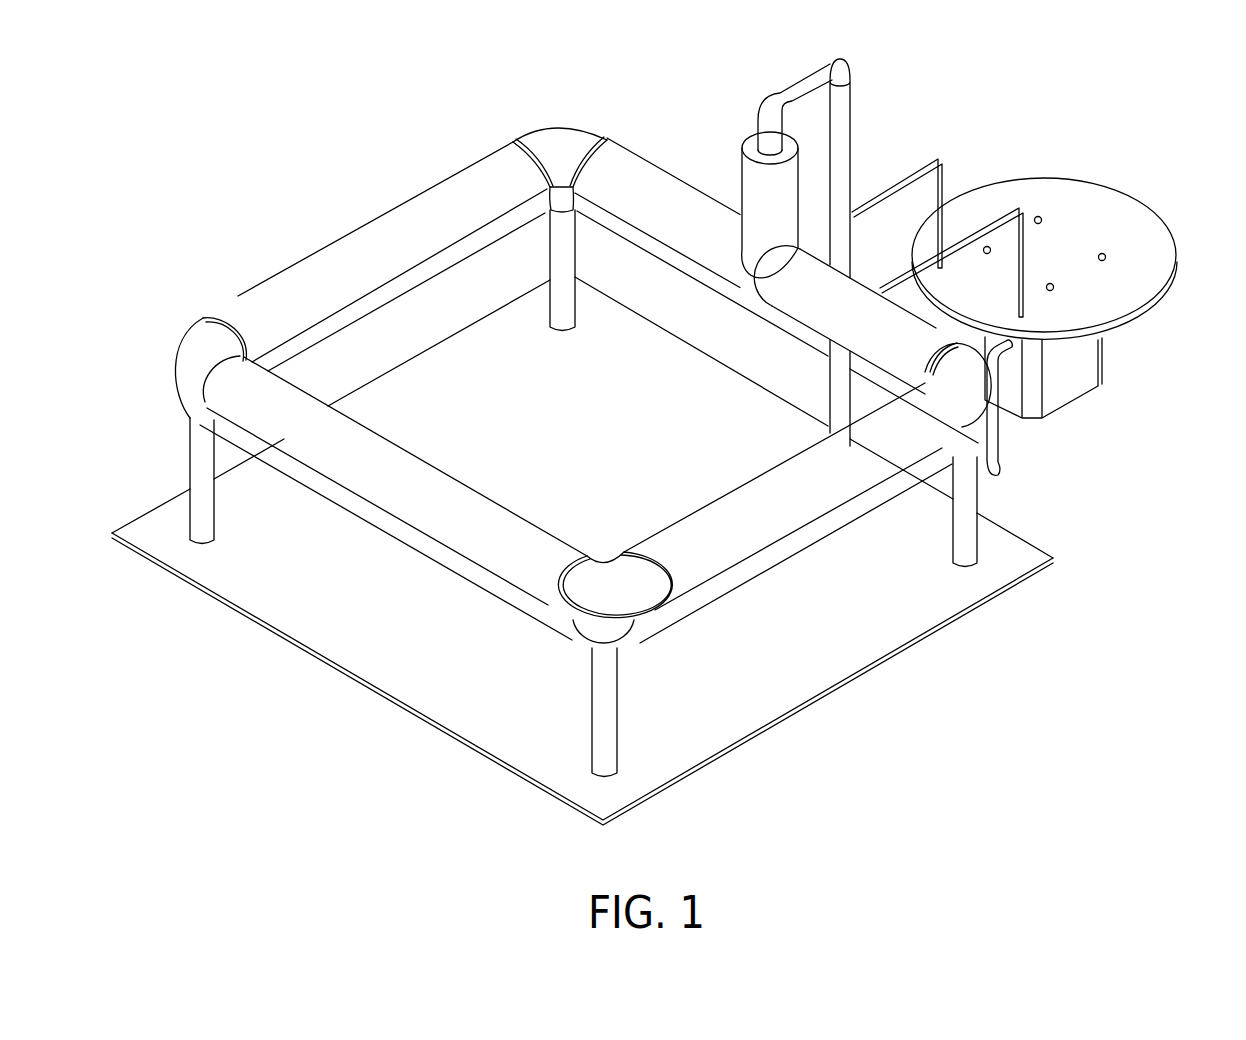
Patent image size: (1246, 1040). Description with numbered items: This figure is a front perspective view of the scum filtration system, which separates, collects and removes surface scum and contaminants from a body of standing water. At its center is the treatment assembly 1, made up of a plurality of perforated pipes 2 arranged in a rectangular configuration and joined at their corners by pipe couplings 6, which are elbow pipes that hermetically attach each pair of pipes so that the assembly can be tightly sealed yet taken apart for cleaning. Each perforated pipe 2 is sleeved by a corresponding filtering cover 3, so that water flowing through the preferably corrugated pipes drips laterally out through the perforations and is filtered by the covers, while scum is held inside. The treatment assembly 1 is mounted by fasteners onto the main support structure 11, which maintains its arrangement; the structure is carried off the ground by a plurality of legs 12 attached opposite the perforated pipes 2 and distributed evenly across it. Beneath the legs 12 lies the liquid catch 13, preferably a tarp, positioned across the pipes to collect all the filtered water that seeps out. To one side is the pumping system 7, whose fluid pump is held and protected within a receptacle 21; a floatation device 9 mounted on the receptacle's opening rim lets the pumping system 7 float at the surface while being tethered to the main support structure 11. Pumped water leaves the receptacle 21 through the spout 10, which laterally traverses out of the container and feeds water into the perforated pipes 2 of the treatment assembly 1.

The treatment assembly 1 is at (250, 138).
The perforated pipes 2 is at (212, 318).
The filtering covers 3 is at (630, 160).
The pipe couplings 6 is at (556, 130).
The pumping system 7 is at (1140, 130).
The floatation device 9 is at (1158, 283).
The spout 10 is at (1000, 407).
The main support structure 11 is at (345, 503).
The legs 12 is at (192, 452).
The liquid catch 13 is at (212, 582).
The receptacle 21 is at (1098, 371).